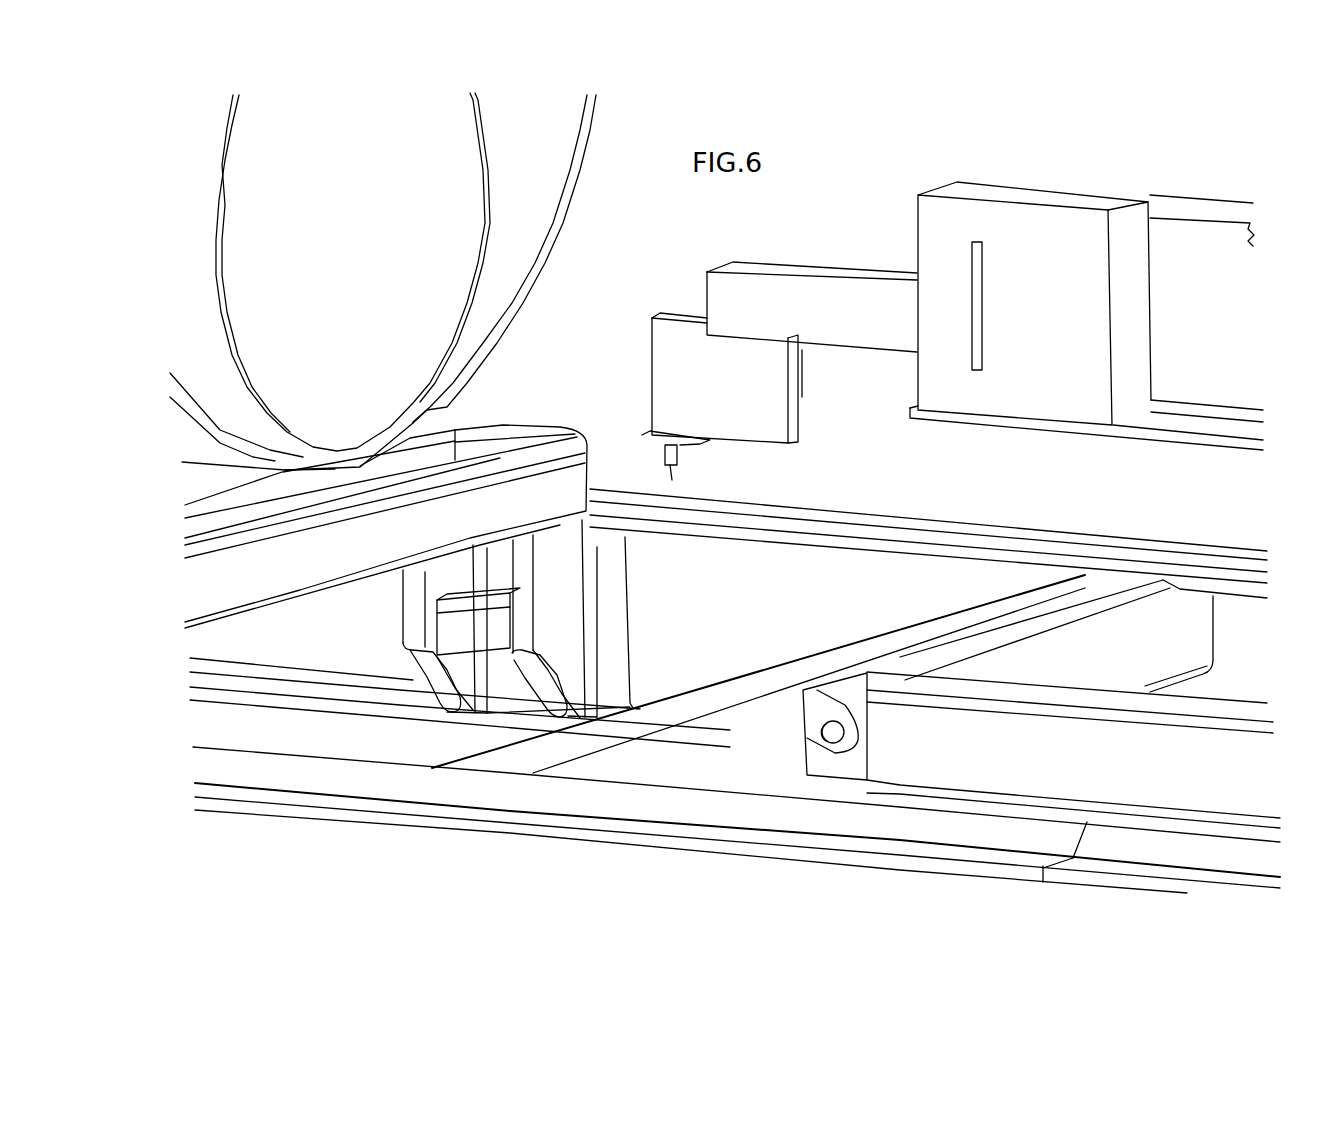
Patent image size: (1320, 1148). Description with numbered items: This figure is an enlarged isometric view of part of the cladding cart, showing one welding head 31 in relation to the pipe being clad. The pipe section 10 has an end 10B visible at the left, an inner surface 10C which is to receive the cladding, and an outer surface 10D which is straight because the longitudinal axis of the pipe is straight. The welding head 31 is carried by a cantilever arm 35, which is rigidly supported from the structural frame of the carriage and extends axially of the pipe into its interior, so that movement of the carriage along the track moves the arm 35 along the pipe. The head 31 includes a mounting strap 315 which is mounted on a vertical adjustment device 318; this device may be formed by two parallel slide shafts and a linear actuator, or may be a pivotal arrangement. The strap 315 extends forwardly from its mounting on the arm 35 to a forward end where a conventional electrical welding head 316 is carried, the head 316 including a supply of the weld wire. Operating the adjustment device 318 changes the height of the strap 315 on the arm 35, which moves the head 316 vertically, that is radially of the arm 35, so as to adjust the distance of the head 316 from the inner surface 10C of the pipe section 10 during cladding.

The pipe section 10 is at (480, 263).
The end of pipe section 10B is at (504, 259).
The inner surface of the pipe 10C is at (455, 188).
The outer surface of the pipe 10D is at (256, 263).
The welding head 31 is at (622, 322).
The mounting strap 315 is at (861, 275).
The electrical welding head 316 is at (713, 460).
The vertical adjustment device 318 is at (943, 357).
The cantilever arm 35 is at (1196, 208).